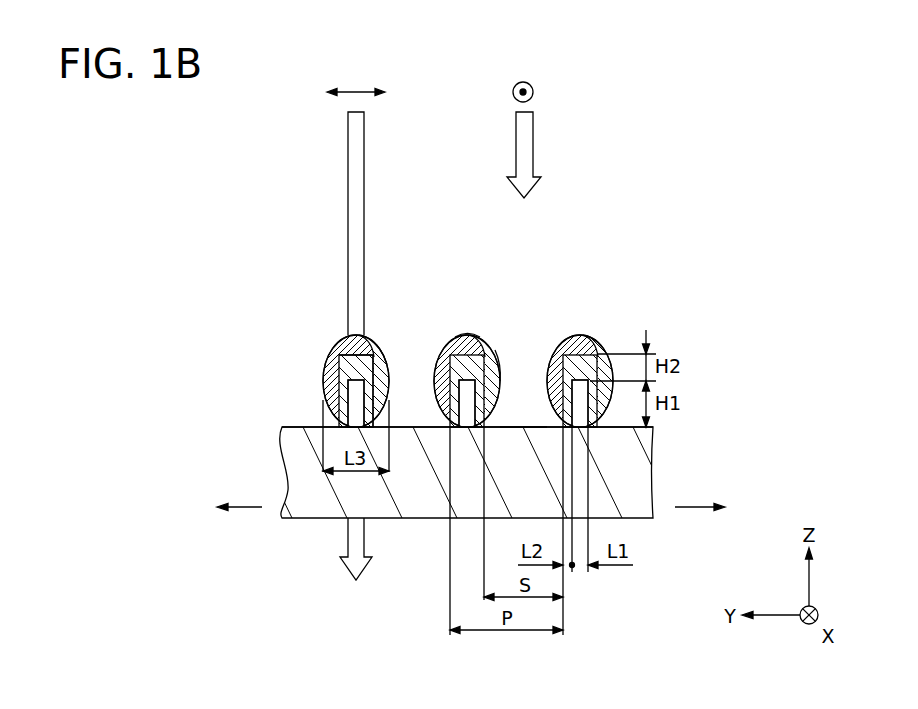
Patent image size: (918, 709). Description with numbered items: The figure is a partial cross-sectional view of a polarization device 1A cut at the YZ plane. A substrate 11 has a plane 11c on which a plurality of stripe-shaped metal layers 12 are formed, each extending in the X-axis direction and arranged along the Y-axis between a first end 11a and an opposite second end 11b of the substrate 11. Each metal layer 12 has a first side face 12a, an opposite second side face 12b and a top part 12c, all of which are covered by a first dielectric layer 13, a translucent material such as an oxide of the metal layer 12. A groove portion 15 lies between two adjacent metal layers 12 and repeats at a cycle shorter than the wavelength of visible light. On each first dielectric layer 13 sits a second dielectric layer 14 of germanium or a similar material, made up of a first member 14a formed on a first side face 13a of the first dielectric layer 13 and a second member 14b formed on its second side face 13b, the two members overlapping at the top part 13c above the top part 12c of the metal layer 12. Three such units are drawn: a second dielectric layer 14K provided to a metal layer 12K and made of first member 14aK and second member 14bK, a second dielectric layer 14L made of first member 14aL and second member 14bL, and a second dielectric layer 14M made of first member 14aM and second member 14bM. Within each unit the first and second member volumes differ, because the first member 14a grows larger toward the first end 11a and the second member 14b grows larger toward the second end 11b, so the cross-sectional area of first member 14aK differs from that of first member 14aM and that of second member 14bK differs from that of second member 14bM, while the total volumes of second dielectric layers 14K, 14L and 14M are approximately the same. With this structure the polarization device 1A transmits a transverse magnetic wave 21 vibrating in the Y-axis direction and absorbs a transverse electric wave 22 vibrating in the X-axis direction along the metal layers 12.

The polarization device 1A is at (707, 208).
The substrate 11 is at (640, 475).
The first end 11a is at (215, 506).
The second end 11b is at (720, 505).
The plane 11c is at (300, 427).
The metal layer 12 is at (398, 391).
The metal layer 12K is at (338, 377).
The first side face 12a is at (338, 405).
The second side face 12b is at (380, 411).
The top part 12c is at (337, 346).
The first dielectric layer 13 is at (327, 366).
The first side face 13a is at (372, 348).
The second side face 13b is at (497, 349).
The top part 13c is at (468, 336).
The second dielectric layer 14 is at (448, 315).
The second dielectric layer 14K is at (304, 315).
The second dielectric layer 14L is at (457, 315).
The second dielectric layer 14M is at (611, 315).
The first member 14a is at (406, 347).
The second member 14b is at (477, 347).
The first member 14aK is at (337, 338).
The second member 14bK is at (372, 338).
The first member 14aL is at (453, 338).
The second member 14bL is at (490, 335).
The first member 14aM is at (573, 338).
The second member 14bM is at (627, 335).
The groove portion 15 is at (522, 417).
The transverse magnetic (TM) wave 21 is at (364, 145).
The transverse electric (TE) wave 22 is at (533, 145).